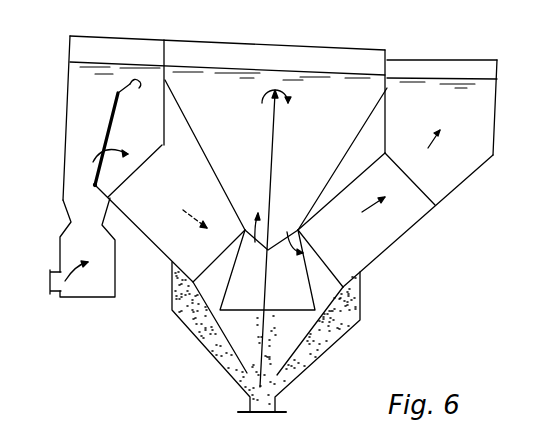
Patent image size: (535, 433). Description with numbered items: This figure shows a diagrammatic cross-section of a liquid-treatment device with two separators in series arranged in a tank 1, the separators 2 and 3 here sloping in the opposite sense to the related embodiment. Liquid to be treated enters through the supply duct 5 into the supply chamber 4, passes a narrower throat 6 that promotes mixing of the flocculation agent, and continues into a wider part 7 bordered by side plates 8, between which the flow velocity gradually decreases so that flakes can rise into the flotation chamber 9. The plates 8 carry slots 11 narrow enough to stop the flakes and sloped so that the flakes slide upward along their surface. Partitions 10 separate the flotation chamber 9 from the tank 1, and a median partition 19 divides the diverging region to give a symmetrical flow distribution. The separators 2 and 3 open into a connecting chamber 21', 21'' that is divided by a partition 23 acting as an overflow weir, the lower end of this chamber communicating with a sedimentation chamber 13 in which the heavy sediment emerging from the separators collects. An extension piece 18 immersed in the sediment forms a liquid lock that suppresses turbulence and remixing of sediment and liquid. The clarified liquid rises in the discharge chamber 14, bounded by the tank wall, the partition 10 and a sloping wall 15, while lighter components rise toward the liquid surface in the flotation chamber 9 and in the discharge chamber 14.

The tank 1 is at (163, 307).
The separator 2 is at (168, 206).
The separator 3 is at (369, 220).
The supply chamber 4 is at (82, 273).
The supply duct 5 is at (44, 280).
The throat 6 is at (87, 247).
The wider part 7 is at (86, 184).
The side plates 8 is at (140, 87).
The flotation chamber 9 is at (92, 115).
The partitions 10 is at (165, 43).
The slots 11 is at (112, 126).
The sedimentation chamber 13 is at (305, 360).
The discharge chamber 14 is at (470, 142).
The sloping wall 15 is at (213, 158).
The extension piece 18 is at (232, 352).
The median partition 19 is at (265, 342).
The connecting chamber part 21' is at (220, 112).
The connecting chamber part 21'' is at (320, 105).
The partition 23 is at (278, 157).